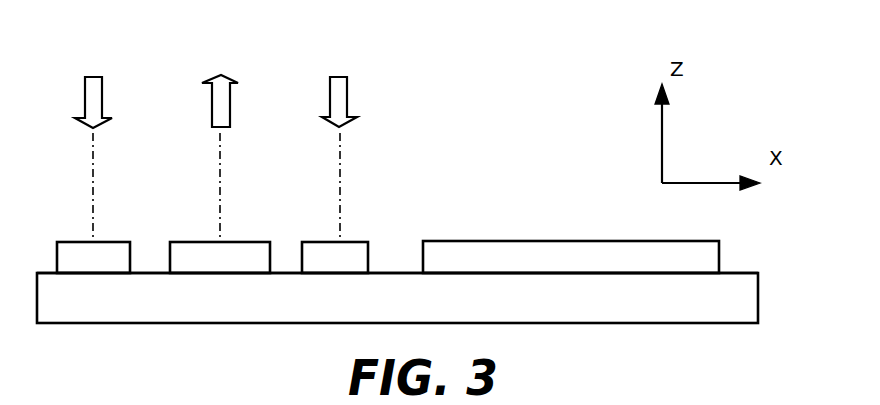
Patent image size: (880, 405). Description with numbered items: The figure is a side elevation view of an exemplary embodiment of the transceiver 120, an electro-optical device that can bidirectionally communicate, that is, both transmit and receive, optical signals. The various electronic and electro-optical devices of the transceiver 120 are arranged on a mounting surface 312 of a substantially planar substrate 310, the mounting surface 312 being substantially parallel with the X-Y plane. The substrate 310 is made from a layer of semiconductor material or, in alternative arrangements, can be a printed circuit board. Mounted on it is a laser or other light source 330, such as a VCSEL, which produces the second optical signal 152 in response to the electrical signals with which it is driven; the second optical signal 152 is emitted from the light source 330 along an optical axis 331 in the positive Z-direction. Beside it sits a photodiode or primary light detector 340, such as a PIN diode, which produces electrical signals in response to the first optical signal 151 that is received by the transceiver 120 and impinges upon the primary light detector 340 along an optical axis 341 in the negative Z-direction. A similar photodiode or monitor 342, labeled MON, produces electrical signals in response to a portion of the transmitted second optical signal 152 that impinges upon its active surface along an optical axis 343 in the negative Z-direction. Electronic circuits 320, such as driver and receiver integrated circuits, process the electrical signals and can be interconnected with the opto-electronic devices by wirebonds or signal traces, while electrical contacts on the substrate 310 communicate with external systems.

The transceiver 120 is at (531, 100).
The first optical signal 151 is at (97, 103).
The second optical signal 152 is at (221, 110).
The substrate 310 is at (752, 305).
The mounting surface 312 is at (741, 271).
The electronic circuits 320 is at (568, 240).
The light source 330 is at (255, 241).
The optical axis 331 is at (220, 170).
The primary light detector 340 is at (102, 241).
The optical axis 341 is at (93, 172).
The monitor 342 is at (365, 241).
The optical axis 343 is at (340, 170).